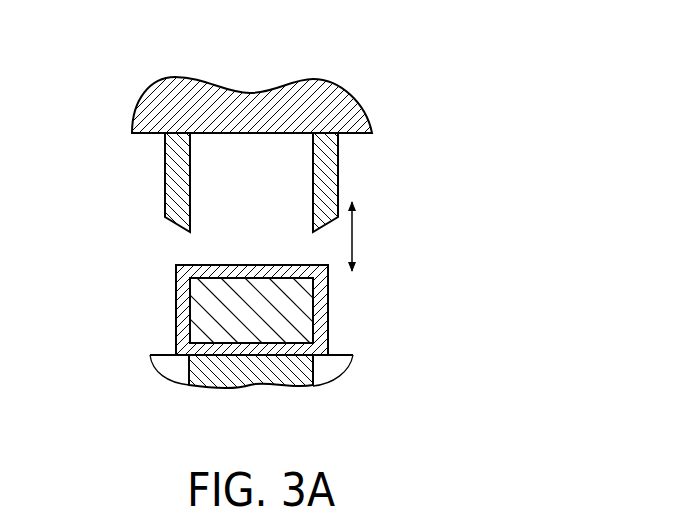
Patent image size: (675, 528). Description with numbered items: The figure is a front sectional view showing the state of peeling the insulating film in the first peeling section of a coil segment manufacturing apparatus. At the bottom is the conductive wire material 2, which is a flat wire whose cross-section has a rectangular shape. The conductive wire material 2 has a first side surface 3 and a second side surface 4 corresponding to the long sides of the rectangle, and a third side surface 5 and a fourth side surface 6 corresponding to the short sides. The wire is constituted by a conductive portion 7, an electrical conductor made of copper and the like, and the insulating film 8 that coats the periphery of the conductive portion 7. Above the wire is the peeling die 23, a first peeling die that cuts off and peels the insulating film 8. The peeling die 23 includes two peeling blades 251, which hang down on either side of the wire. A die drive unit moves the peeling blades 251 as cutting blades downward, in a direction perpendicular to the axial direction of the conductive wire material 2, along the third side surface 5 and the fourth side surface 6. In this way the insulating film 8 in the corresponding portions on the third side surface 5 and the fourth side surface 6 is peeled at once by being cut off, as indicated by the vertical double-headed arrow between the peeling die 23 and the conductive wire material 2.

The peeling die 23 is at (293, 135).
The peeling blades 251 is at (165, 165).
The conductive wire material 2 is at (274, 316).
The first side surface 3 is at (248, 265).
The third side surface 5 is at (176, 323).
The fourth side surface 6 is at (330, 317).
The conductive portion 7 is at (194, 300).
The insulating film 8 is at (177, 332).
The second side surface 4 is at (238, 352).